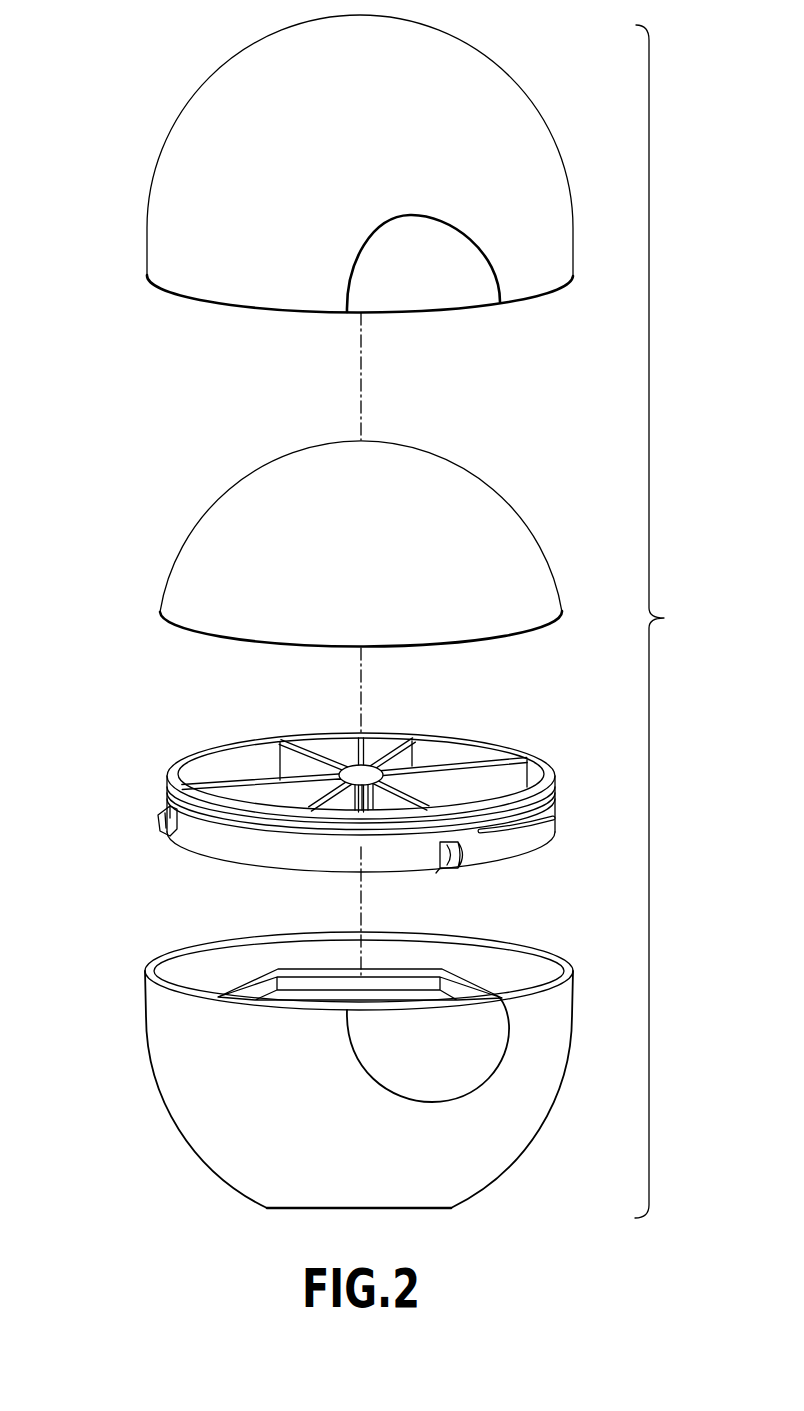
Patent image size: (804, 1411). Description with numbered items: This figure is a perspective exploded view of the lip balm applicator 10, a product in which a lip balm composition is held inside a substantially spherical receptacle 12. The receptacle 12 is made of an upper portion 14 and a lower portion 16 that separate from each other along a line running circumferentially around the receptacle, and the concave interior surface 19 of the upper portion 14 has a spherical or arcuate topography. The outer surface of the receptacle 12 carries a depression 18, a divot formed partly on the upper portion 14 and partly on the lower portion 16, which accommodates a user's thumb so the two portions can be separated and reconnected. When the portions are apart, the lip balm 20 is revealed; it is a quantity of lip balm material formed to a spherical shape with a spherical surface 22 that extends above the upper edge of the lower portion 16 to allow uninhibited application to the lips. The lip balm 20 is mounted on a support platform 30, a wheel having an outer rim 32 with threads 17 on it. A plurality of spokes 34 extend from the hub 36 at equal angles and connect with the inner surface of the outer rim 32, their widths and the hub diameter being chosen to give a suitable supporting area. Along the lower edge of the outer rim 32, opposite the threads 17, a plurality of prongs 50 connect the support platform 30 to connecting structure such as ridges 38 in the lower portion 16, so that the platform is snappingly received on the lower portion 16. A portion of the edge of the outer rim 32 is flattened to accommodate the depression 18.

The applicator 10 is at (673, 617).
The receptacle 12 is at (347, 611).
The upper portion 14 is at (330, 193).
The lower portion 16 is at (188, 1140).
The threads 17 is at (168, 795).
The depression 18 is at (468, 240).
The interior surface 19 is at (217, 283).
The lip balm 20 is at (334, 544).
The spherical surface 22 is at (480, 498).
The support platform 30 is at (338, 799).
The outer rim 32 is at (535, 758).
The spokes 34 is at (493, 763).
The hub 36 is at (352, 768).
The ridges 38 is at (460, 982).
The prongs 50 is at (172, 836).